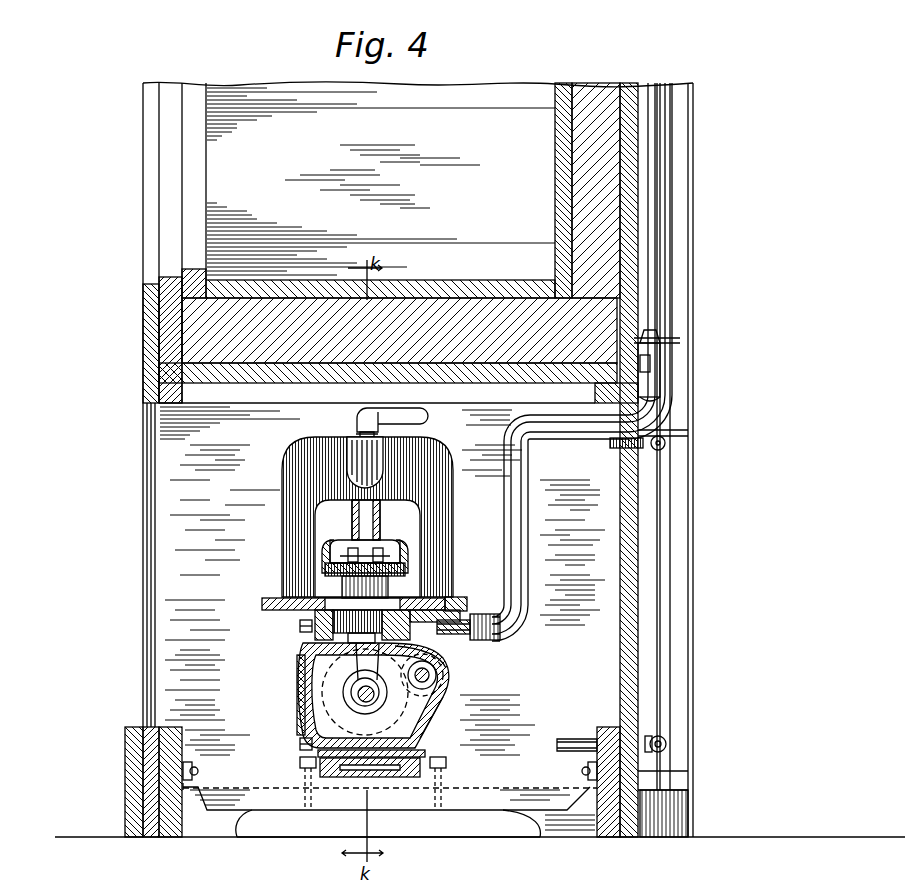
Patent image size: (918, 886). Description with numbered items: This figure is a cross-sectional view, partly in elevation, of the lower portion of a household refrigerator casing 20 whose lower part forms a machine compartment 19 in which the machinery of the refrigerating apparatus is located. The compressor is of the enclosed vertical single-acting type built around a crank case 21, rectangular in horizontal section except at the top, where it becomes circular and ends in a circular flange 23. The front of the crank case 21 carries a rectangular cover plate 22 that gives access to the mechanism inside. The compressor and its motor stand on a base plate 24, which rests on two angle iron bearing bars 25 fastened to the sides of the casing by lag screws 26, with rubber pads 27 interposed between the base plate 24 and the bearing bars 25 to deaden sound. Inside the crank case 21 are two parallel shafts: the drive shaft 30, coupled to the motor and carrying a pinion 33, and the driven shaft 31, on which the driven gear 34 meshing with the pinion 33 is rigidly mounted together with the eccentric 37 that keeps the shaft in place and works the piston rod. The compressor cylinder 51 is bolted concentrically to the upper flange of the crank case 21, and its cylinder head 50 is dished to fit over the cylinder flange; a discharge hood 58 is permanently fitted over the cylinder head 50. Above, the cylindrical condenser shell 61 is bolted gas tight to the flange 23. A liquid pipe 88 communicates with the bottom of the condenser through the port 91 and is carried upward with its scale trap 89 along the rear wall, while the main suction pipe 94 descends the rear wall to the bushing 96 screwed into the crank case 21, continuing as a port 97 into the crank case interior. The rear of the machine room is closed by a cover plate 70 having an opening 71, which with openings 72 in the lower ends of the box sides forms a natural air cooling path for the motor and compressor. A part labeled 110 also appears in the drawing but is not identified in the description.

The machine compartment 19 is at (382, 618).
The refrigerator casing 20 is at (148, 310).
The crank case 21 is at (454, 668).
The cover plate 22 is at (315, 702).
The circular flange 23 is at (262, 606).
The base plate 24 is at (403, 778).
The angle iron bearing bars 25 is at (508, 825).
The lag screws 26 is at (200, 768).
The rubber pads 27 is at (460, 778).
The drive shaft 30 is at (437, 682).
The driven shaft 31 is at (388, 703).
The pinion 33 is at (453, 679).
The driven gear 34 is at (302, 645).
The eccentric 37 is at (302, 742).
The cylinder head 50 is at (327, 566).
The compressor cylinder 51 is at (350, 580).
The discharge hood 58 is at (342, 516).
The condenser shell 61 is at (277, 540).
The cover plate 70 is at (640, 569).
The opening 71 is at (648, 456).
The openings 72 is at (282, 828).
The liquid pipe 88 is at (655, 201).
The scale trap 89 is at (662, 352).
The port 91 is at (449, 599).
The main suction pipe 94 is at (675, 240).
The bushing 96 is at (492, 637).
The port 97 is at (445, 635).
The connecting rod 110 is at (350, 668).